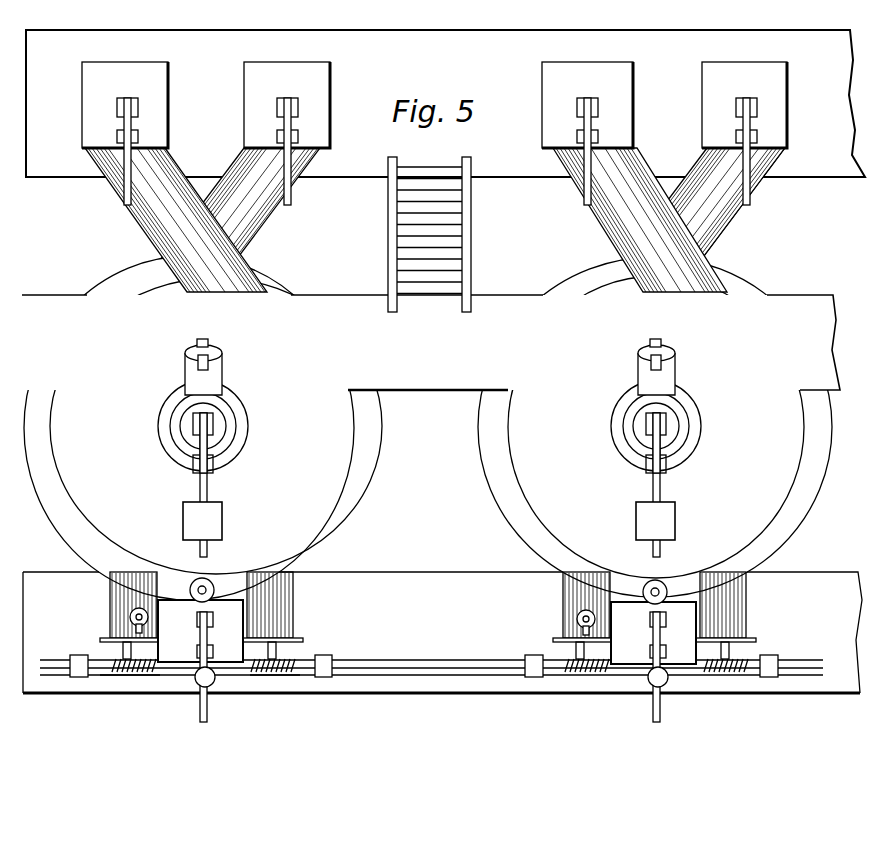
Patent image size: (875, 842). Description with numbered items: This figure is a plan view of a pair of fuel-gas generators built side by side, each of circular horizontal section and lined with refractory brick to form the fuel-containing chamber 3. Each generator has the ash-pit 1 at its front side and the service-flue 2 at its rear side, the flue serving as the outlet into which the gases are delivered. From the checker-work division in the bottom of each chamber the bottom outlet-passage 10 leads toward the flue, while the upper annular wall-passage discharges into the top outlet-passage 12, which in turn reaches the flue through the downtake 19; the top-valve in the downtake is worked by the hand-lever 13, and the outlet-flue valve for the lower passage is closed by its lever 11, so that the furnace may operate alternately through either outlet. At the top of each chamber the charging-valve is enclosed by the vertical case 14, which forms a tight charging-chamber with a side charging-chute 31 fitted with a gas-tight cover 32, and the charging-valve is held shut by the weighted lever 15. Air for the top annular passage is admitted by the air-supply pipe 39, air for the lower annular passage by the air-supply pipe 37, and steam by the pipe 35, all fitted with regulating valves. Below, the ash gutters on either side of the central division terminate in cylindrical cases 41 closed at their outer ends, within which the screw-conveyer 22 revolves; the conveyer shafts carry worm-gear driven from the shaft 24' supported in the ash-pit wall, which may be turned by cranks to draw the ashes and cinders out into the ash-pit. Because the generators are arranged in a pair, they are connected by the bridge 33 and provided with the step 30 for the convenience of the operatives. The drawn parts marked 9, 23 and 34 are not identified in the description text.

The ash-pit 1 is at (442, 632).
The service-flue 2 is at (445, 103).
The fuel-containing chamber 3 is at (428, 428).
The bearing block 9 is at (427, 661).
The bottom outlet-passage 10 is at (460, 220).
The lever 11 is at (527, 143).
The top outlet-passage 12 is at (406, 220).
The hand-lever 13 is at (365, 141).
The vertical case 14 is at (429, 426).
The weighted lever 15 is at (434, 485).
The downtake 19 is at (434, 105).
The screw-conveyer 22 is at (430, 659).
The support plate 23 is at (200, 683).
The shaft 24' is at (431, 660).
The step 30 is at (438, 234).
The charging-chute 31 is at (430, 370).
The gas-tight cover 32 is at (434, 354).
The bridge 33 is at (431, 342).
The block 34 is at (429, 521).
The steam pipe 35 is at (196, 680).
The air-supply pipe 37 is at (128, 619).
The air-supply pipe 39 is at (194, 593).
The cylindrical case 41 is at (428, 615).